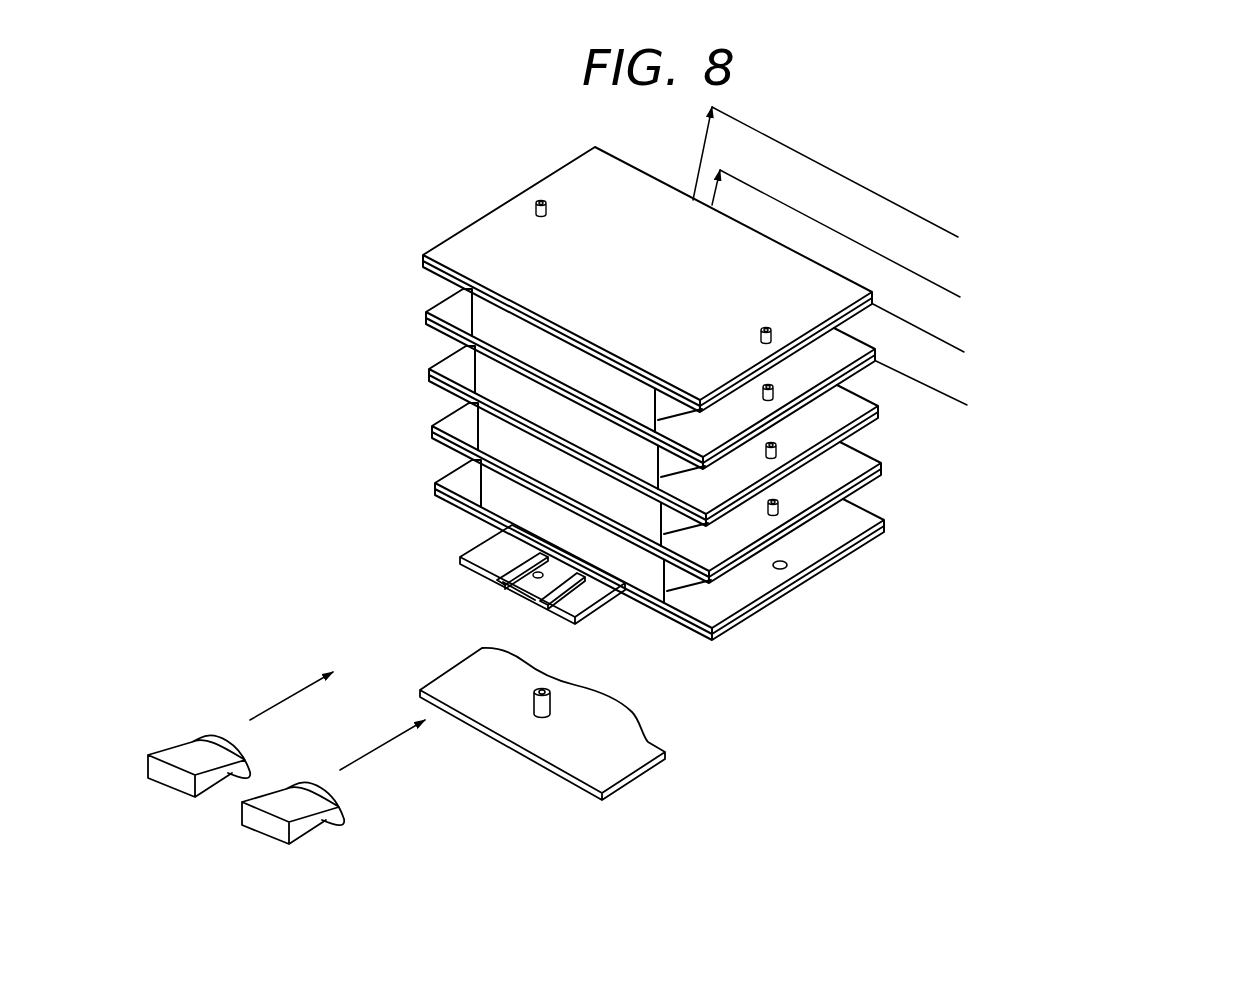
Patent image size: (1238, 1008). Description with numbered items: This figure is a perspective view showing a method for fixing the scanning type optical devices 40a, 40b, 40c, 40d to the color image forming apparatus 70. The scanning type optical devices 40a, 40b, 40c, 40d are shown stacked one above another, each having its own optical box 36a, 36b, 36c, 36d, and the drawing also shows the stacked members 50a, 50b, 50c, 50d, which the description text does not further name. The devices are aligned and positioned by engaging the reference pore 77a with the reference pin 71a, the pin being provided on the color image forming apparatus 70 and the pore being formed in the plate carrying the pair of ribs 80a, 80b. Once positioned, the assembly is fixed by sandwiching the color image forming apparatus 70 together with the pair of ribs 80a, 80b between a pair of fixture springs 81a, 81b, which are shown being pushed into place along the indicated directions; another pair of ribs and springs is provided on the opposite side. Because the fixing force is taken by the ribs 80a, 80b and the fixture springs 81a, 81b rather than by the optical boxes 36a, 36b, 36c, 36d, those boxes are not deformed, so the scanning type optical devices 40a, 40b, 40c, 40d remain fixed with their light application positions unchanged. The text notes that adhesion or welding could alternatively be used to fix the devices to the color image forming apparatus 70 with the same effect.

The first plate 50a is at (850, 279).
The second plate 50b is at (853, 336).
The third plate 50c is at (856, 393).
The fourth plate 50d is at (859, 450).
The optical box 36a is at (640, 412).
The optical box 36b is at (643, 470).
The optical box 36c is at (646, 527).
The optical box 36d is at (661, 608).
The scanning type optical device 40a is at (476, 320).
The scanning type optical device 40b is at (479, 378).
The scanning type optical device 40c is at (482, 434).
The scanning type optical device 40d is at (485, 491).
The rib 80a is at (462, 553).
The rib 80b is at (585, 607).
The reference pore 77a is at (533, 580).
The color image forming apparatus 70 is at (657, 735).
The reference pin 71a is at (550, 700).
The fixture spring 81a is at (175, 790).
The fixture spring 81b is at (268, 840).